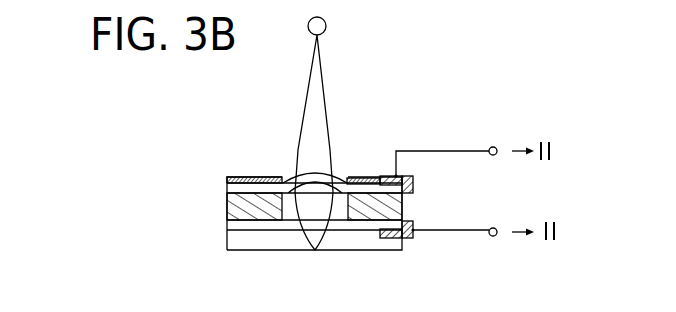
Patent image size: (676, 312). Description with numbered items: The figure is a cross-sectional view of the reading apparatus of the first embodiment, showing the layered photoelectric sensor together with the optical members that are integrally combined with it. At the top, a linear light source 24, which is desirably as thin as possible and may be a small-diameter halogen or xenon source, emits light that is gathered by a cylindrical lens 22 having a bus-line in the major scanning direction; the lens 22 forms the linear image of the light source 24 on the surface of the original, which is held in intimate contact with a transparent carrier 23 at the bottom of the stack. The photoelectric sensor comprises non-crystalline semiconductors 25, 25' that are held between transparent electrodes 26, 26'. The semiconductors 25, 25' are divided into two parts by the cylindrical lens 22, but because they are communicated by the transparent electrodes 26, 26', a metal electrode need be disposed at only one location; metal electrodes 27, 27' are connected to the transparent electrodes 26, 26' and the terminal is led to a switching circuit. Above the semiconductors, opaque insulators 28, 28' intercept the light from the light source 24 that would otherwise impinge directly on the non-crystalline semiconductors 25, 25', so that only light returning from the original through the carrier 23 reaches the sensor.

The cylindrical lens 22 is at (337, 198).
The transparent carrier 23 is at (256, 250).
The linear light source 24 is at (326, 26).
The non-crystalline semiconductor 25 is at (283, 203).
The non-crystalline semiconductor 25' is at (412, 207).
The transparent electrode 26 is at (283, 178).
The transparent electrode 26' is at (283, 226).
The metal electrode 27 is at (434, 172).
The metal electrode 27' is at (434, 243).
The opaque insulator 28 is at (254, 151).
The opaque insulator 28' is at (374, 149).